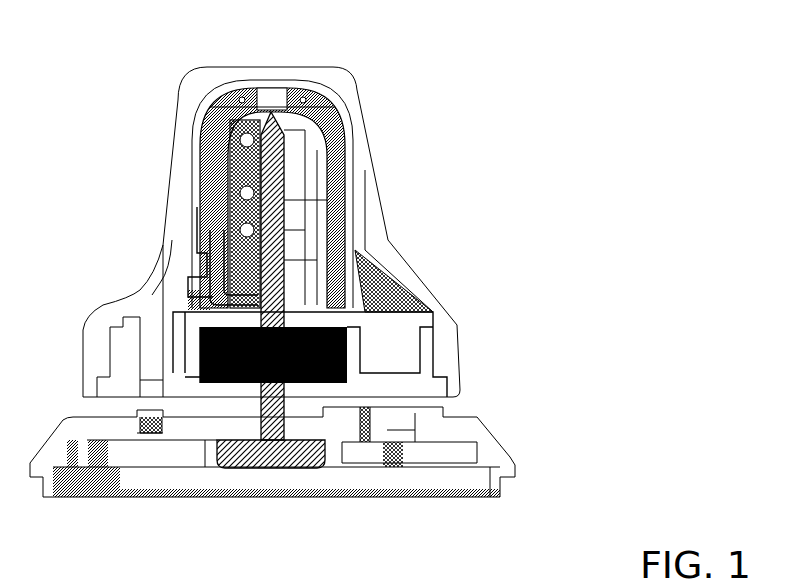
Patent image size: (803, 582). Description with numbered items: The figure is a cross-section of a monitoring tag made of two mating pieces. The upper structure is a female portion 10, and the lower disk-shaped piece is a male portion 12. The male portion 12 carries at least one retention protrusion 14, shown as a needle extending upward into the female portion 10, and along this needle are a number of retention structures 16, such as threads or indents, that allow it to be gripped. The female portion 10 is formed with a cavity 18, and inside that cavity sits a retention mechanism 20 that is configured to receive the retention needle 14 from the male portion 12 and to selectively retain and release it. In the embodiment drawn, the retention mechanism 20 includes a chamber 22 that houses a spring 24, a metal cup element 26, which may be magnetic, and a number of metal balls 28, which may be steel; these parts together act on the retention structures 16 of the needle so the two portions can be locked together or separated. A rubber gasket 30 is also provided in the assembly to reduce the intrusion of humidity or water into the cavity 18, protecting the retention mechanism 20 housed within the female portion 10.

The female portion 10 is at (353, 120).
The male portion 12 is at (512, 465).
The retention protrusion 14 is at (290, 465).
The retention structures 16 is at (283, 282).
The cavity 18 is at (200, 118).
The retention mechanism 20 is at (195, 152).
The chamber 22 is at (187, 298).
The spring 24 is at (233, 175).
The metal cup element 26 is at (212, 208).
The metal balls 28 is at (233, 243).
The rubber gasket 30 is at (230, 362).